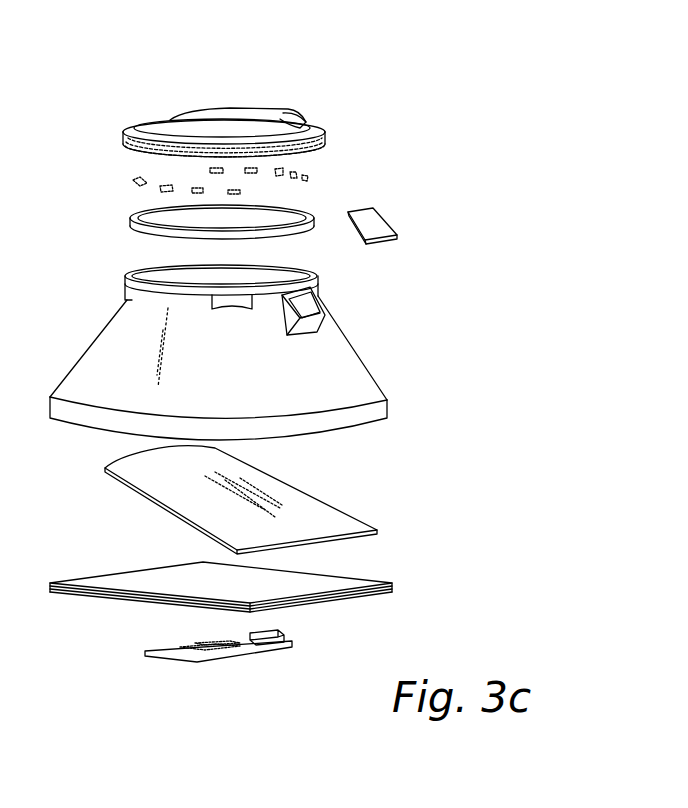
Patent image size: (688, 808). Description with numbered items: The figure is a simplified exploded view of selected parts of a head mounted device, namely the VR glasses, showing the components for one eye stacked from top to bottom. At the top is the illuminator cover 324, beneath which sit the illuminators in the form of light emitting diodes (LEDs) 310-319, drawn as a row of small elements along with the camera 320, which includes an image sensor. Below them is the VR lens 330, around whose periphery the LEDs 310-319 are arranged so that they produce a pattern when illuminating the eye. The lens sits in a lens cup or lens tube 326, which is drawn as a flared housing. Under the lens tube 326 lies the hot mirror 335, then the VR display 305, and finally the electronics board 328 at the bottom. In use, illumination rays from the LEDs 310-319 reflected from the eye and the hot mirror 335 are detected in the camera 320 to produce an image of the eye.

The illuminator cover 324 is at (306, 118).
The light emitting diodes (LEDs) 310-319 is at (286, 172).
The camera 320 is at (377, 229).
The VR lens 330 is at (306, 226).
The lens cup or lens tube 326 is at (363, 379).
The hot mirror 335 is at (327, 518).
The VR display 305 is at (370, 588).
The electronics board 328 is at (252, 652).